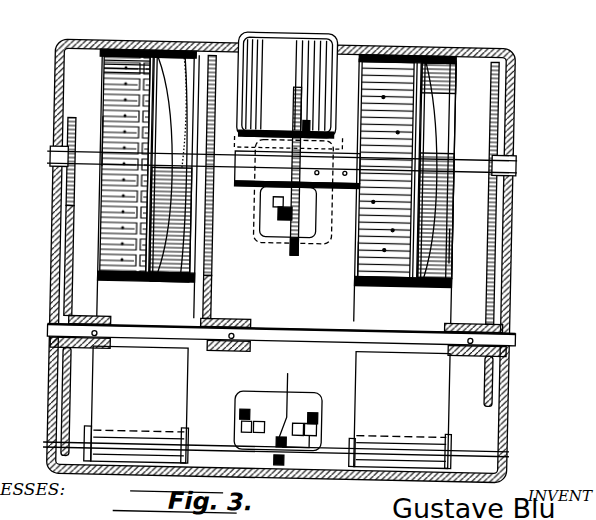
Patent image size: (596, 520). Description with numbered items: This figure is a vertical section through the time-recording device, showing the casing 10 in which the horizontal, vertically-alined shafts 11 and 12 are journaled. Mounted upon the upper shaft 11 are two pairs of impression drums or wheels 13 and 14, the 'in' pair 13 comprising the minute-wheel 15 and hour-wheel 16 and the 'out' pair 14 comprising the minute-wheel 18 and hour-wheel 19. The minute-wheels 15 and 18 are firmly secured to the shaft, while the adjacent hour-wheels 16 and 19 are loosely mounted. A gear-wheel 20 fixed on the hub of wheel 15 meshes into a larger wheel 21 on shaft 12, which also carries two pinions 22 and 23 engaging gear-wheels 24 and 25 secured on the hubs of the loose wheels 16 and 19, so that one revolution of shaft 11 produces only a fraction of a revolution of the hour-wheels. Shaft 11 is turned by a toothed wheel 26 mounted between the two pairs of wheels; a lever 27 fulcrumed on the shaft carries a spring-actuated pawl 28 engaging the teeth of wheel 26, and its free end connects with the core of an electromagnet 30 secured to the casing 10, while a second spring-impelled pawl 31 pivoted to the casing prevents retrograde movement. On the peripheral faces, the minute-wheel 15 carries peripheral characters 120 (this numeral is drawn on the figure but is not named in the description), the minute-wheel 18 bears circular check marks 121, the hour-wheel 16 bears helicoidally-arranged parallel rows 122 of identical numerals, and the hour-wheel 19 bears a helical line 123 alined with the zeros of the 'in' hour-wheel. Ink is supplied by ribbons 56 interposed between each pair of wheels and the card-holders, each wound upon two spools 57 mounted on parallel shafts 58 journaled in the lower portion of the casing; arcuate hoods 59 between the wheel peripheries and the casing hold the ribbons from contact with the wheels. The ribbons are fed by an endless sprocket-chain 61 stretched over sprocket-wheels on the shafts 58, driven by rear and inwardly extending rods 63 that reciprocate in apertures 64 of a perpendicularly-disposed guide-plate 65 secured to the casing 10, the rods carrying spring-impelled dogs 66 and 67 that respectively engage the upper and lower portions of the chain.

The casing 10 is at (51, 113).
The shaft 11 is at (48, 168).
The shaft 12 is at (52, 337).
The pair of impression wheels 13 is at (106, 164).
The pair of impression wheels 14 is at (413, 171).
The minute-wheel 15 is at (126, 164).
The hour-wheel 16 is at (172, 165).
The minute-wheel 18 is at (389, 170).
The hour-wheel 19 is at (437, 171).
The gear-wheel 20 is at (69, 126).
The larger wheel 21 is at (66, 247).
The pinion 22 is at (209, 304).
The pinion 23 is at (497, 301).
The gear-wheel 24 is at (207, 254).
The gear-wheel 25 is at (493, 128).
The toothed wheel 26 is at (301, 224).
The lever 27 is at (280, 172).
The spring-actuated pawl 28 is at (282, 213).
The electromagnet 30 is at (289, 90).
The spring-impelled pawl 31 is at (304, 123).
The ribbons 56 is at (58, 56).
The spools 57 is at (194, 432).
The shafts 58 is at (480, 449).
The arcuate hoods 59 is at (102, 52).
The sprocket-chain 61 is at (285, 465).
The rods 63 is at (243, 416).
The apertures 64 is at (246, 411).
The guide-plate 65 is at (278, 421).
The spring-impelled dog 66 is at (287, 401).
The spring-impelled dog 67 is at (300, 441).
The roller surface 120 is at (100, 132).
The check marks 121 is at (357, 261).
The rows of numerals 122 is at (175, 284).
The helical line 123 is at (449, 239).